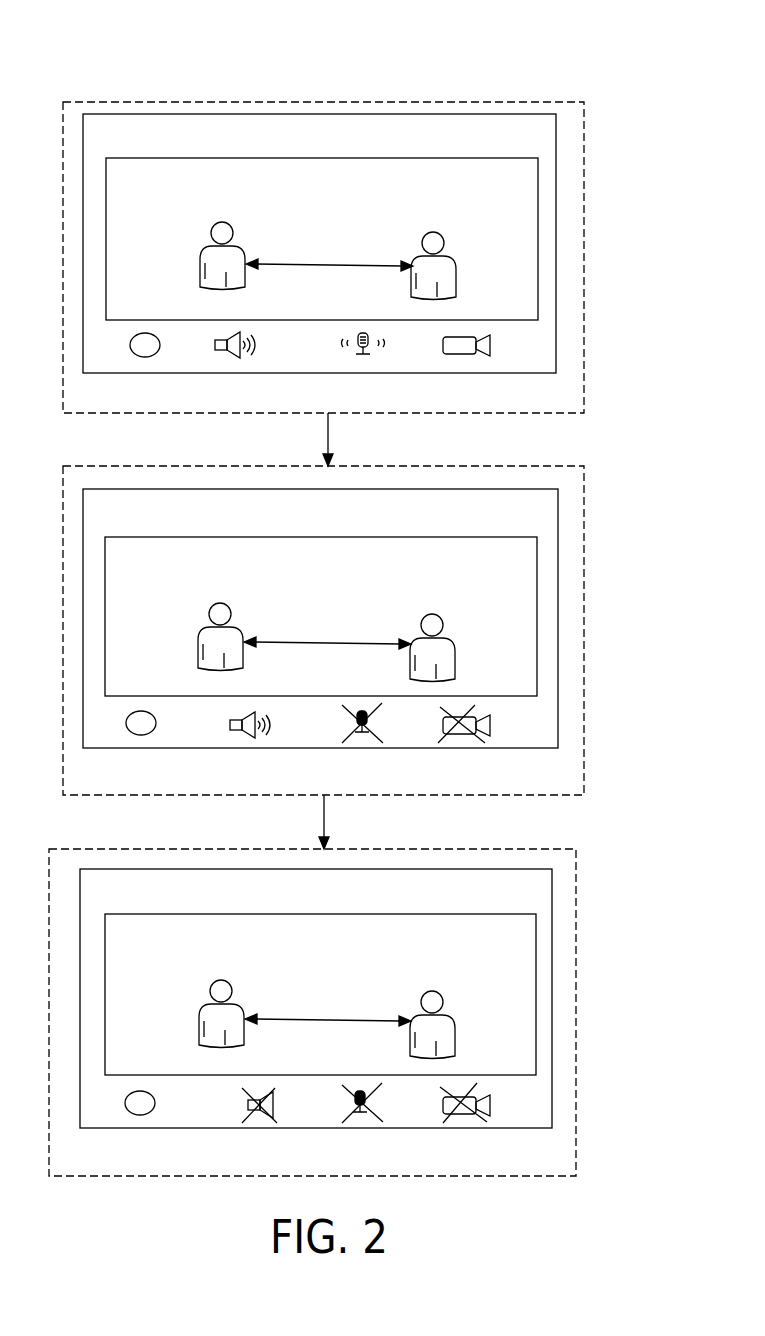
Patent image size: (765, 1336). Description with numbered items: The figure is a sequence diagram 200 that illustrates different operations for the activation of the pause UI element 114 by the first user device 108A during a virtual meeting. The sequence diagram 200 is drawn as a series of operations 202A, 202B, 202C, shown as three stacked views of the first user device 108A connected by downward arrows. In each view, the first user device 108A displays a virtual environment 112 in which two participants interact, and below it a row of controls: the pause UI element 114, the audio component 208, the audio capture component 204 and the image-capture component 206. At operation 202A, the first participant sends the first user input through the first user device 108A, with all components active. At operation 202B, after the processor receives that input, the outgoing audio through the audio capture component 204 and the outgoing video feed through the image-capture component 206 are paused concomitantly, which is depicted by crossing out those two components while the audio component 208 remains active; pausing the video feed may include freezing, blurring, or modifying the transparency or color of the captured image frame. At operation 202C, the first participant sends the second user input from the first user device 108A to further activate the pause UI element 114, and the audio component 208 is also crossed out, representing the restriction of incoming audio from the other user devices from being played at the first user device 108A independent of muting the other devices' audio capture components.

The sequence diagram 200 is at (639, 51).
The first operation 202A is at (584, 258).
The second operation 202B is at (585, 633).
The third operation 202C is at (577, 1000).
The first user device 108A is at (453, 147).
The virtual environment 112 is at (306, 229).
The pause user interface element 114 is at (150, 357).
The audio capture component 204 is at (368, 357).
The image-capture component 206 is at (468, 356).
The audio component 208 is at (235, 355).